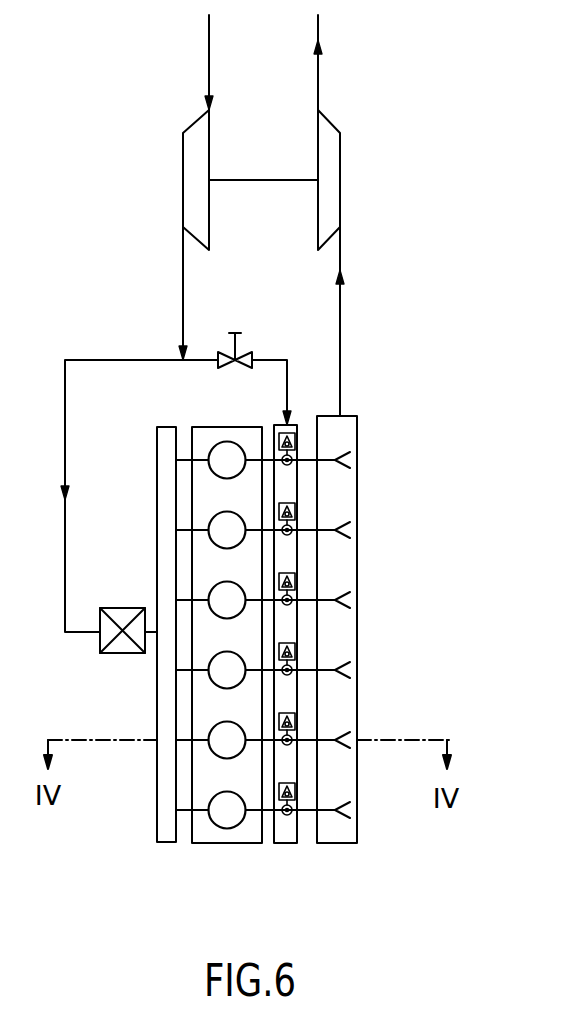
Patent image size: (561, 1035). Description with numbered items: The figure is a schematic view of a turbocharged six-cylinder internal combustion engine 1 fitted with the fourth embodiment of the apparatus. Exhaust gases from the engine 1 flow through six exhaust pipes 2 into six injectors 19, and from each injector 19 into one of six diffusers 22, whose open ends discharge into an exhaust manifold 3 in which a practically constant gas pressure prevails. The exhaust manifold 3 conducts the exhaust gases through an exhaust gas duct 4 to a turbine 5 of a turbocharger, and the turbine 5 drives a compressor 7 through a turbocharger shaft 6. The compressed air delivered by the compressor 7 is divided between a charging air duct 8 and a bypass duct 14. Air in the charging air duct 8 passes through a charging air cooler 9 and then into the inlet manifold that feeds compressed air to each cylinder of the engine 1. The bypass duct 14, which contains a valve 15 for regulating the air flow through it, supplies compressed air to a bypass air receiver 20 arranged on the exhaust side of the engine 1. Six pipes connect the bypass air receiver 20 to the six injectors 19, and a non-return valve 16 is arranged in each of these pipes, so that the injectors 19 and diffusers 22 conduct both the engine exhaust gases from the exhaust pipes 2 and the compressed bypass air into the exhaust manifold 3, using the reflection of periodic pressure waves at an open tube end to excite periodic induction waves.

The six-cylinder internal combustion engine 1 is at (200, 512).
The exhaust pipes 2 is at (257, 808).
The exhaust manifold 3 is at (346, 509).
The exhaust gas duct 4 is at (343, 324).
The turbine 5 is at (324, 181).
The turbocharger shaft 6 is at (259, 178).
The compressor 7 is at (188, 181).
The charging air duct 8 is at (105, 358).
The charging air cooler 9 is at (123, 655).
The bypass duct 14 is at (197, 358).
The valve 15 is at (248, 351).
The non-return valve 16 is at (298, 430).
The injectors 19 is at (297, 455).
The bypass air receiver 20 is at (279, 635).
The diffusers 22 is at (348, 533).